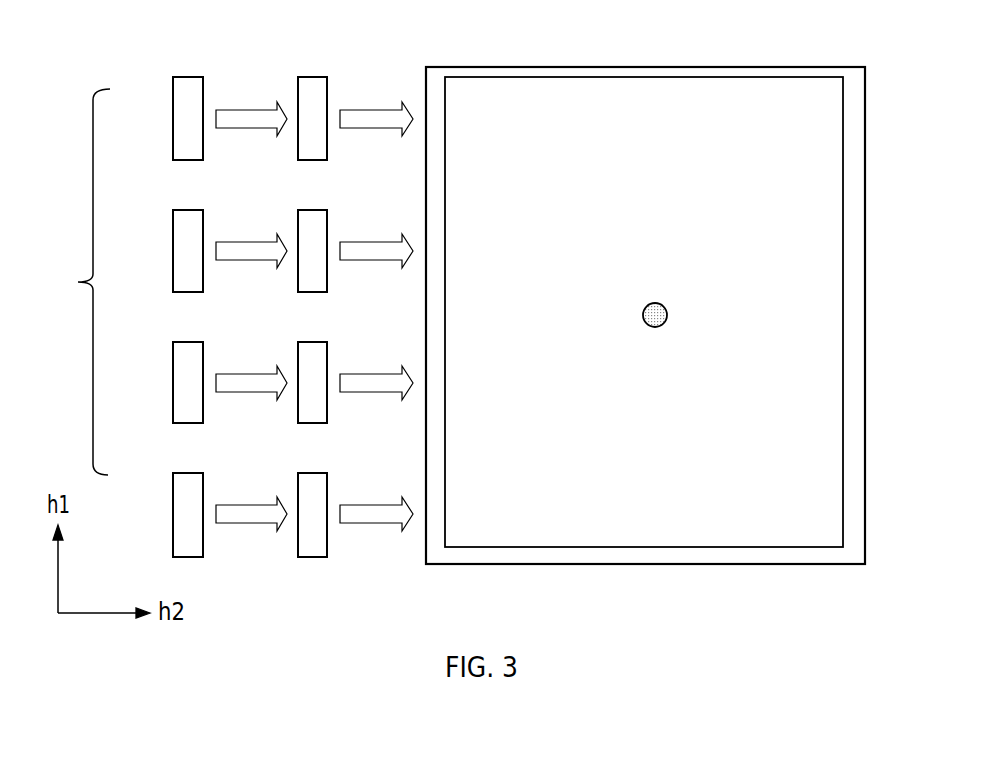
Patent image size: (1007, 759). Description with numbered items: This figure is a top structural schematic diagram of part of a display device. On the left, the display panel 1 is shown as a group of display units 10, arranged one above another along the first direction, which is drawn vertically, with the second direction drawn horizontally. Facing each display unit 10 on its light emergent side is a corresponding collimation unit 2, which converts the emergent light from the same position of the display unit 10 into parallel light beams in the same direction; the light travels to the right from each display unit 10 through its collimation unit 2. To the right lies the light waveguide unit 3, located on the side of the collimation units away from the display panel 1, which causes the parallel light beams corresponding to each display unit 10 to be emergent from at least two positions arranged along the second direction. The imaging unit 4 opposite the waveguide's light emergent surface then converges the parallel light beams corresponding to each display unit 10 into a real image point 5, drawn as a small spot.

The display panel 1 is at (87, 282).
The display unit 10 is at (185, 127).
The collimation unit 2 is at (312, 87).
The light waveguide unit 3 is at (853, 285).
The imaging unit 4 is at (843, 333).
The real image point 5 is at (667, 312).